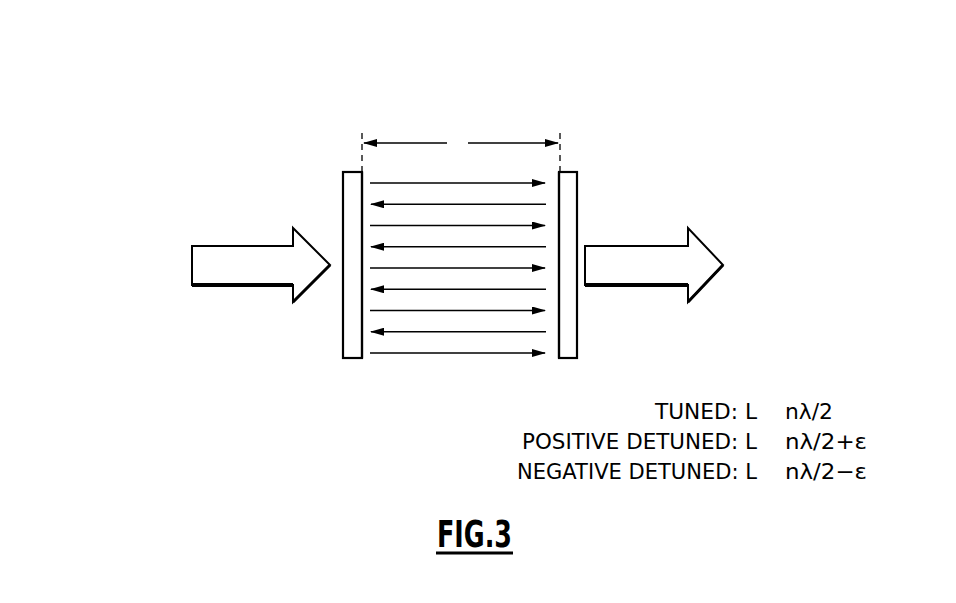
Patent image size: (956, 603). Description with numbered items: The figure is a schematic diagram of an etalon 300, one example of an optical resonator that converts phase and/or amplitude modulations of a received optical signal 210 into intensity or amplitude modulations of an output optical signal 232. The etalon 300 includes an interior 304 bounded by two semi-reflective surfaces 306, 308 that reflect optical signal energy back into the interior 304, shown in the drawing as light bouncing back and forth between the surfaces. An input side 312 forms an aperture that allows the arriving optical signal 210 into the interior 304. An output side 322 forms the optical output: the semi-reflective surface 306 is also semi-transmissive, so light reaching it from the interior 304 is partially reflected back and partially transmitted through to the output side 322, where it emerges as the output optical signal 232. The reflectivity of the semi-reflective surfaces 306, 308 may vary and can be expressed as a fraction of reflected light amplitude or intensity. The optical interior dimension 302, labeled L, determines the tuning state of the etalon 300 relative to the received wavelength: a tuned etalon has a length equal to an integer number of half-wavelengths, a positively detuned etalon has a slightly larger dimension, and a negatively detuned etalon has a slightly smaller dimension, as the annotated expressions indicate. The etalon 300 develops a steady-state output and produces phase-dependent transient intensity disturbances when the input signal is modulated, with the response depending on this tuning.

The etalon 300 is at (524, 60).
The optical interior dimension 302 is at (418, 143).
The interior 304 is at (462, 364).
The semi-reflective surface 306 is at (552, 363).
The semi-reflective surface 308 is at (365, 363).
The input side 312 is at (341, 207).
The output side 322 is at (580, 204).
The received optical signal 210 is at (238, 246).
The output optical signal 232 is at (629, 246).